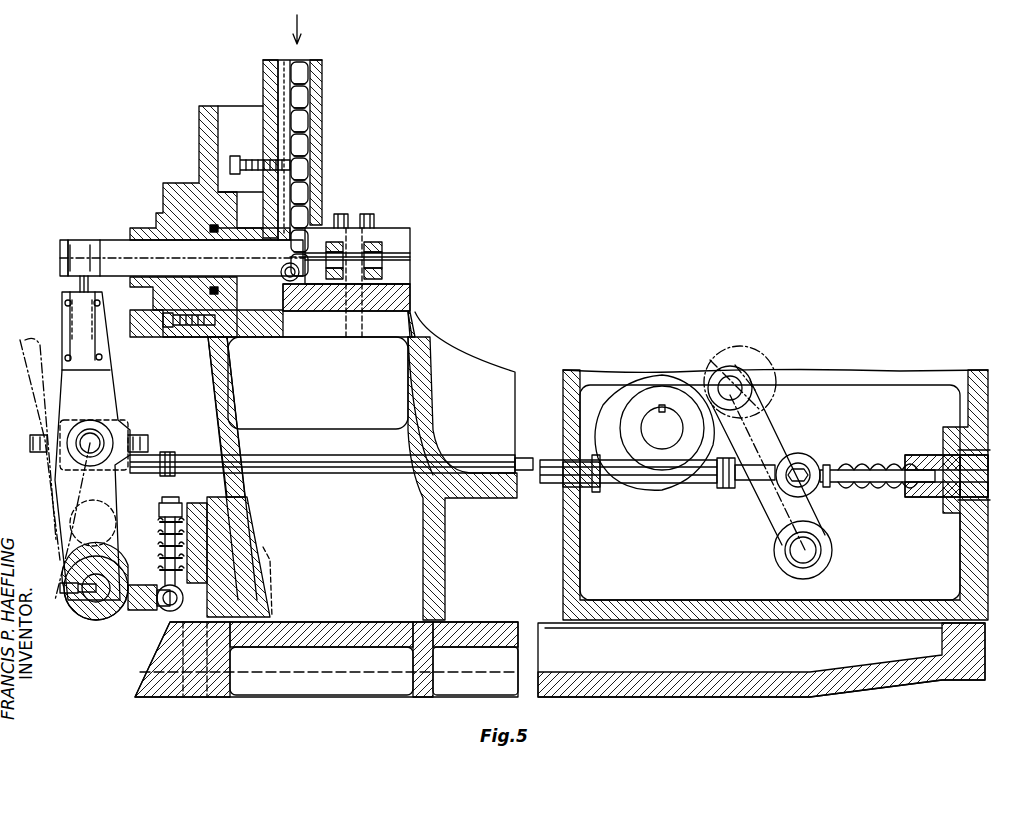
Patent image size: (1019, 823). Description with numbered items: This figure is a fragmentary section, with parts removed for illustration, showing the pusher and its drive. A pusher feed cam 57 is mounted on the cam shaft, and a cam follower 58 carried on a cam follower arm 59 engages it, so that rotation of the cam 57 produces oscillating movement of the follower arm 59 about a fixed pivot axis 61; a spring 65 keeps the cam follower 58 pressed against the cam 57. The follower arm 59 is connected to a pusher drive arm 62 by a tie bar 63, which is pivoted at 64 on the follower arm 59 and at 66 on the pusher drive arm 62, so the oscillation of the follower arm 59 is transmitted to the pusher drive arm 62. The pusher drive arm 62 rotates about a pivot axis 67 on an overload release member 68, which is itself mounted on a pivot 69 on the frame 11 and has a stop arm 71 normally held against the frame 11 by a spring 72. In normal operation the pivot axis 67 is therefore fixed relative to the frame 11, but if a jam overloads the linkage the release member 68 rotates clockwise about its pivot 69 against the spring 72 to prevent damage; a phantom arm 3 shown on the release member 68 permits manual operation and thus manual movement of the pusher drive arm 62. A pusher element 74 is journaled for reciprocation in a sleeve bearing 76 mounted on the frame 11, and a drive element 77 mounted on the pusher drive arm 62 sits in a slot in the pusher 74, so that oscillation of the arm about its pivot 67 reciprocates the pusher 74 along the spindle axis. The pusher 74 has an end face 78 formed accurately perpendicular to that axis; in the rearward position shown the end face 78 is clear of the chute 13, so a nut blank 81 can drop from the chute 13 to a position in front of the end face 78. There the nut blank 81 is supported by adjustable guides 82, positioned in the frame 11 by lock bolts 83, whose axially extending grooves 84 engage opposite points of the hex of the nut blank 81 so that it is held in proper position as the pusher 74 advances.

The lever arm 3 is at (22, 398).
The frame 11 is at (258, 512).
The chute 13 is at (322, 75).
The pusher feed cam 57 is at (680, 380).
The cam follower 58 is at (738, 366).
The cam follower arm 59 is at (770, 420).
The fixed pivot axis 61 is at (790, 560).
The pusher drive arm 62 is at (110, 385).
The tie bar 63 is at (330, 466).
The pivot 64 is at (805, 465).
The spring 65 is at (890, 462).
The pivot 66 is at (90, 443).
The pivot axis 67 is at (95, 525).
The overload release member 68 is at (64, 578).
The pivot 69 is at (90, 600).
The stop arm 71 is at (138, 612).
The spring 72 is at (157, 552).
The pusher element 74 is at (108, 240).
The sleeve bearing 76 is at (145, 288).
The drive element 77 is at (78, 288).
The end face 78 is at (283, 284).
The nut blank 81 is at (302, 120).
The adjustable guides 82 is at (405, 275).
The lock bolts 83 is at (410, 296).
The grooves 84 is at (395, 252).